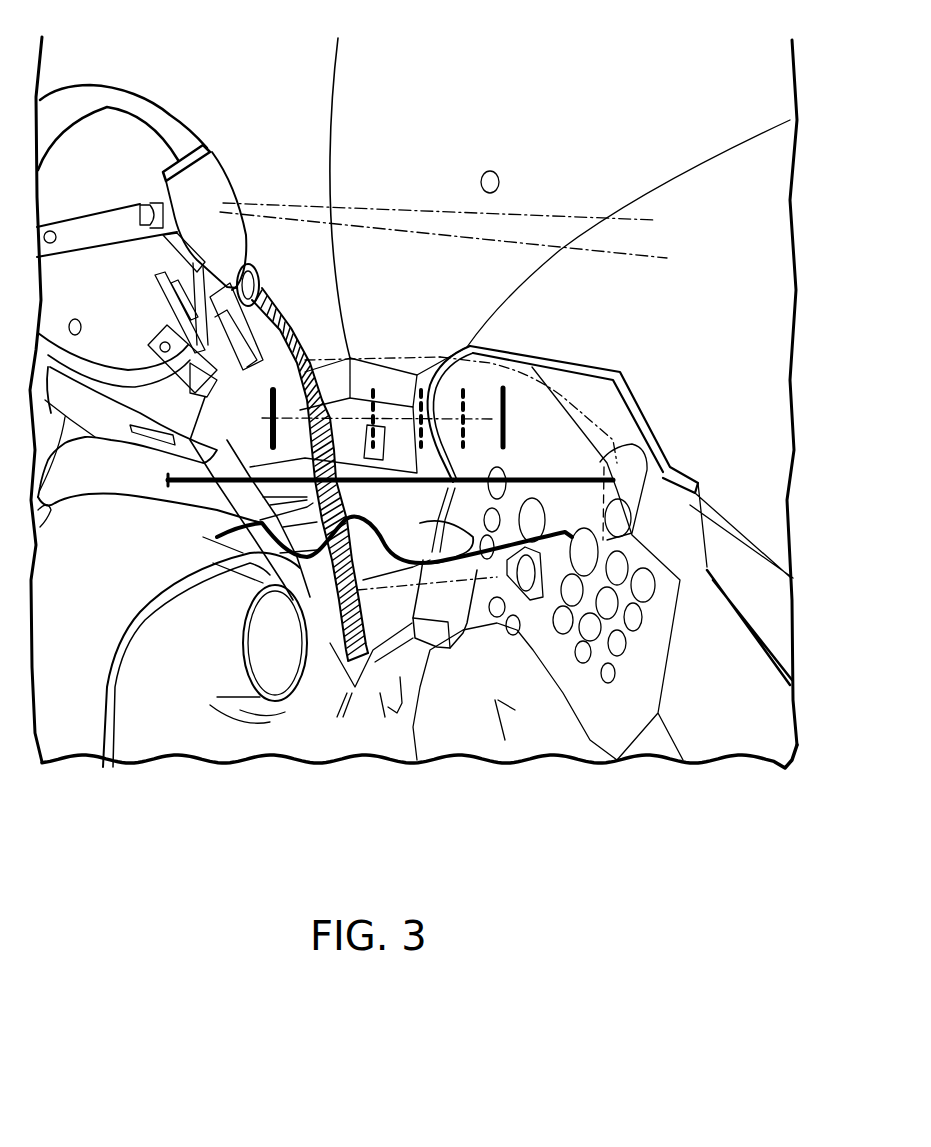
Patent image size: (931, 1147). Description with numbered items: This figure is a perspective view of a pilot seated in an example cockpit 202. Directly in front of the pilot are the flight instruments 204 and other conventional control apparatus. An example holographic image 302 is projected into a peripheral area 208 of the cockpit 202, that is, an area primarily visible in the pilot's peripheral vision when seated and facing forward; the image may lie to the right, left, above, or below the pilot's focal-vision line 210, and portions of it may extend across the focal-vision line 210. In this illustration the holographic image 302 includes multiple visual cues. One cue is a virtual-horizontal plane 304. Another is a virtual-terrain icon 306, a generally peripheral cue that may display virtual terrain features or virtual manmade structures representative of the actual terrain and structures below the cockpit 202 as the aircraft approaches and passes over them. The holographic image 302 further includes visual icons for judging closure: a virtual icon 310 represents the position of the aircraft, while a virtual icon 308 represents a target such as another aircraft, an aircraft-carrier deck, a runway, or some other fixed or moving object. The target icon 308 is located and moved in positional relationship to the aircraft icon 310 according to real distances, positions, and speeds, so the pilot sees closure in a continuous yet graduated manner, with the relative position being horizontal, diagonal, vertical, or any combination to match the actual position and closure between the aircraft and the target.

The cockpit 202 is at (424, 40).
The flight instruments 204 is at (600, 550).
The peripheral area 208 is at (503, 368).
The focal-vision line 210 is at (360, 208).
The holographic image 302 is at (533, 423).
The virtual-horizontal plane 304 is at (547, 540).
The virtual-terrain icon 306 is at (620, 450).
The virtual icon (target icon) 308 is at (532, 365).
The virtual icon (aircraft position icon) 310 is at (333, 357).